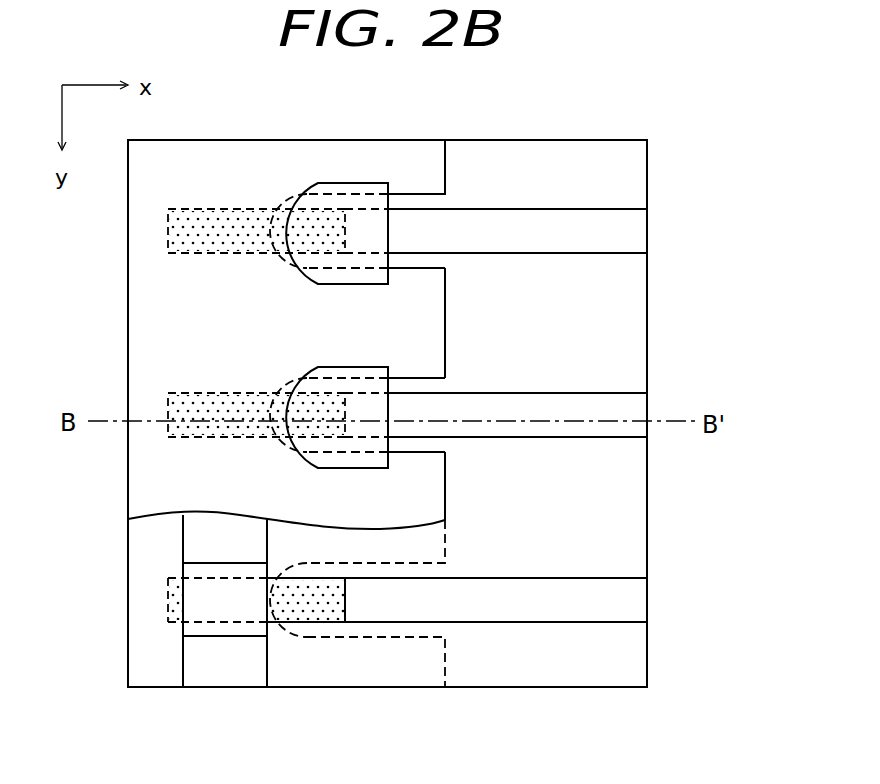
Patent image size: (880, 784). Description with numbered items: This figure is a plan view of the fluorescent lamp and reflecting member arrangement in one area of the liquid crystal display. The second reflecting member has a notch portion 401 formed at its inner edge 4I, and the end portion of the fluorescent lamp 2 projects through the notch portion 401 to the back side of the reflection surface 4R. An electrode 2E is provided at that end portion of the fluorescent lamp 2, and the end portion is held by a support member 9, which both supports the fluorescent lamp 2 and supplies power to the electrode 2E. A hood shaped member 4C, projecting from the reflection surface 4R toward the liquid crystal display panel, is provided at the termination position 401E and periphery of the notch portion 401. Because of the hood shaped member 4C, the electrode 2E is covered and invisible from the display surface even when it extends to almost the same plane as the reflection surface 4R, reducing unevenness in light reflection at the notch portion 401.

The fluorescent lamp 2 is at (622, 231).
The electrode 2E is at (238, 225).
The hood shaped member 4C is at (340, 181).
The notch portion 401 is at (421, 192).
The termination position 401E is at (283, 392).
The inner edge 4I is at (449, 312).
The reflection surface 4R is at (197, 303).
The support member 9 is at (225, 640).